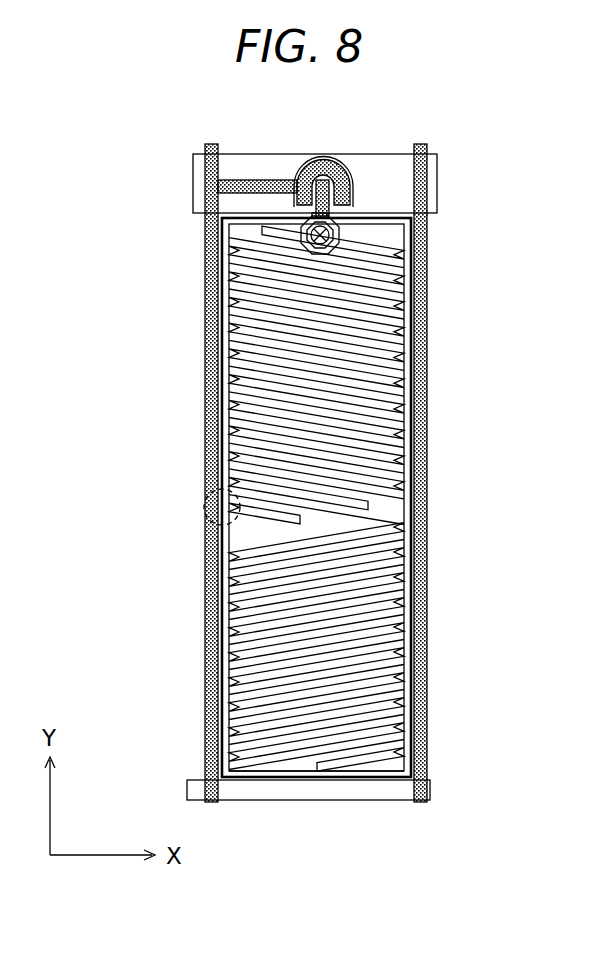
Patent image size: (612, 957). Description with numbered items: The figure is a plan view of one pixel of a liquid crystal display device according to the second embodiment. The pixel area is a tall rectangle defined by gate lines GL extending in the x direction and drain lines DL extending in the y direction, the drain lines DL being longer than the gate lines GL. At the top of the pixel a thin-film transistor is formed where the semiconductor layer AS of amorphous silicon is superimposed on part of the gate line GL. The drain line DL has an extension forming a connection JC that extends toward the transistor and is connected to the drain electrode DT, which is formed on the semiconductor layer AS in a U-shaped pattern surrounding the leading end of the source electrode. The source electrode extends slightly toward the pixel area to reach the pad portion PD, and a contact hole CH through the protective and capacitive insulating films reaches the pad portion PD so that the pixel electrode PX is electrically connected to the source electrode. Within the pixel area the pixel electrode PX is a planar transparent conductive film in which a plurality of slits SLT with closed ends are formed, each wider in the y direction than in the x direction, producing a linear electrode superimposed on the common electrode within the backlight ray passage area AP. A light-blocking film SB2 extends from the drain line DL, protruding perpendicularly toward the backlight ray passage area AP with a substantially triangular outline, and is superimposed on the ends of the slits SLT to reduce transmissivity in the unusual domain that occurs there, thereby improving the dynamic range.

The gate line GL is at (193, 177).
The drain line DL is at (205, 413).
The connection JC is at (235, 180).
The semiconductor layer AS is at (318, 159).
The drain electrode DT is at (340, 175).
The pad portion PD is at (340, 232).
The contact hole CH is at (332, 242).
The slit SLT is at (242, 301).
The pixel electrode PX is at (235, 367).
The light-blocking film SB2 is at (204, 500).
The backlight ray passage area AP is at (293, 773).